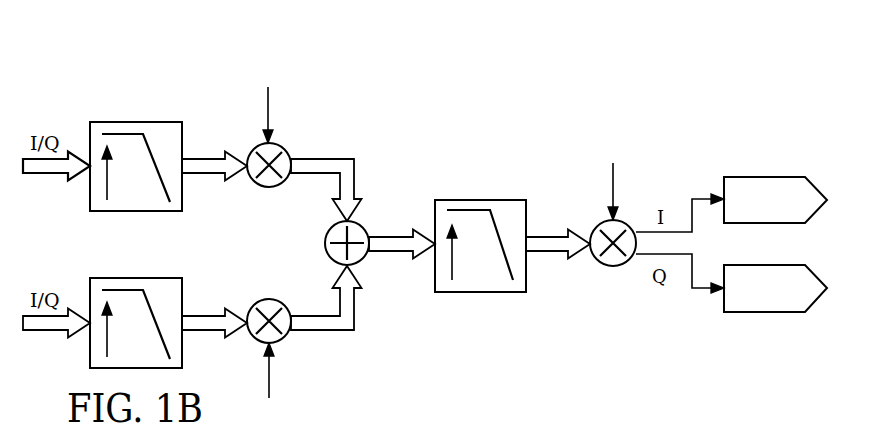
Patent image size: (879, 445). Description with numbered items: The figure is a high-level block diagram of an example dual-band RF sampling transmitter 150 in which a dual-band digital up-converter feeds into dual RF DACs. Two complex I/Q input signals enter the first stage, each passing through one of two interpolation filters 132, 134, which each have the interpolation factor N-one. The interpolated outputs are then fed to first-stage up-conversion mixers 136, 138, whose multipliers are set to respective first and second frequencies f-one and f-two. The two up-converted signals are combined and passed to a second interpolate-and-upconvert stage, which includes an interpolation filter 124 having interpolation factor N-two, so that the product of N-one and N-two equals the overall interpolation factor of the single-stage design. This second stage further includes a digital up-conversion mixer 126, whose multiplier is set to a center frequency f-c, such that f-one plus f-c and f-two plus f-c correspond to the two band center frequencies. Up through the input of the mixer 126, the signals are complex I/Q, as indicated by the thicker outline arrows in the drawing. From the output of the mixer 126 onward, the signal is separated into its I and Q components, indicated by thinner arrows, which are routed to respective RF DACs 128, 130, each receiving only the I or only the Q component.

The dual-band RF sampling transmitter 150 is at (592, 76).
The interpolation filter 132 is at (135, 121).
The interpolation filter 134 is at (90, 357).
The first-stage up-conversion mixer 136 is at (260, 187).
The first-stage up-conversion mixer 138 is at (276, 299).
The interpolation filter 124 is at (480, 200).
The digital up-conversion mixer 126 is at (620, 266).
The RF DAC 128 is at (768, 177).
The RF DAC 130 is at (768, 312).